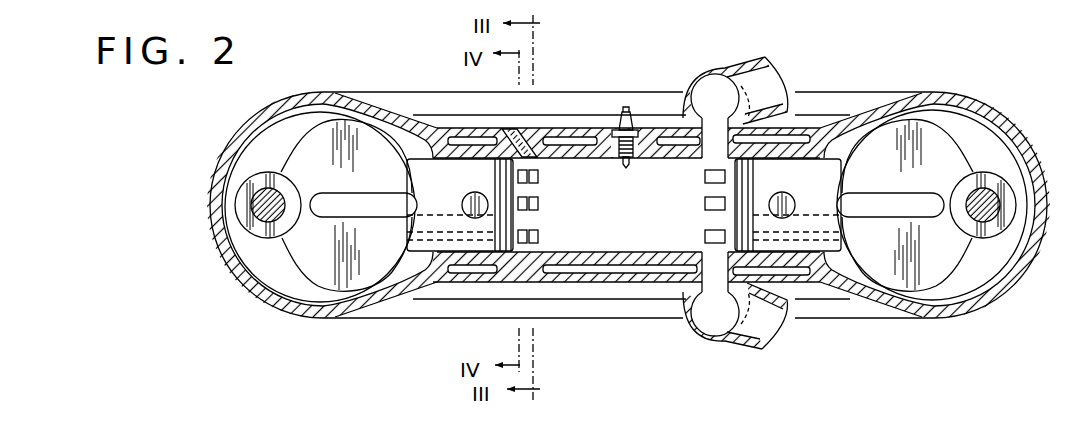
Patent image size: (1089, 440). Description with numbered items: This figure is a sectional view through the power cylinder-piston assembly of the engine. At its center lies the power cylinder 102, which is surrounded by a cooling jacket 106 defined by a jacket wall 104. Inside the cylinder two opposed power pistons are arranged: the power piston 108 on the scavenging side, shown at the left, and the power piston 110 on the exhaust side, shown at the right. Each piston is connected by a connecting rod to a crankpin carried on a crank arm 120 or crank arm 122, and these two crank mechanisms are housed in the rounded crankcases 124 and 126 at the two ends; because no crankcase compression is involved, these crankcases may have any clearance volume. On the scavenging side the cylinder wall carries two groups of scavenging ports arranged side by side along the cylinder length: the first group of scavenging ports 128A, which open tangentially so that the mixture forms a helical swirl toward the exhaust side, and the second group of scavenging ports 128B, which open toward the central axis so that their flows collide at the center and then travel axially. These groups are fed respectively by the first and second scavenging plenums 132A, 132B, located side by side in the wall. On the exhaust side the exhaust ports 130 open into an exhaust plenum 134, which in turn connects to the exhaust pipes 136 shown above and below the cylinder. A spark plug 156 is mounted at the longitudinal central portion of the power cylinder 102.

The power cylinder 102 is at (603, 254).
The jacket wall 104 is at (628, 287).
The cooling jacket 106 is at (577, 270).
The power piston 108 is at (538, 207).
The power piston 110 is at (733, 220).
The crank arm 120 is at (307, 140).
The crank arm 122 is at (957, 132).
The crankcase 124 is at (260, 275).
The crankcase 126 is at (997, 277).
The first group of scavenging ports 128A is at (538, 178).
The second group of scavenging ports 128B is at (517, 207).
The exhaust ports 130 is at (705, 203).
The first scavenging plenum 132A is at (532, 274).
The second scavenging plenum 132B is at (500, 272).
The exhaust plenum 134 is at (707, 92).
The exhaust pipes 136 is at (763, 78).
The spark plug 156 is at (622, 166).